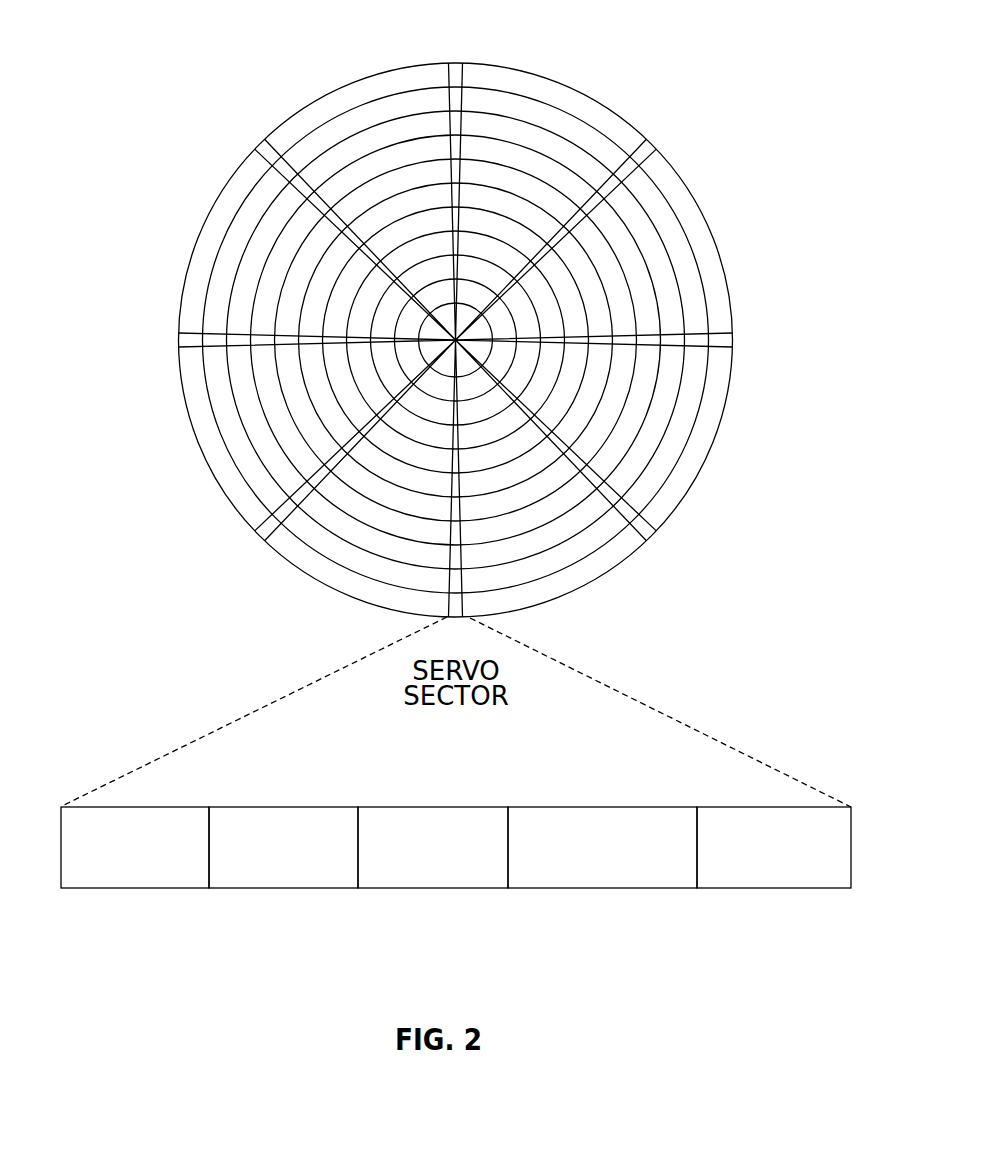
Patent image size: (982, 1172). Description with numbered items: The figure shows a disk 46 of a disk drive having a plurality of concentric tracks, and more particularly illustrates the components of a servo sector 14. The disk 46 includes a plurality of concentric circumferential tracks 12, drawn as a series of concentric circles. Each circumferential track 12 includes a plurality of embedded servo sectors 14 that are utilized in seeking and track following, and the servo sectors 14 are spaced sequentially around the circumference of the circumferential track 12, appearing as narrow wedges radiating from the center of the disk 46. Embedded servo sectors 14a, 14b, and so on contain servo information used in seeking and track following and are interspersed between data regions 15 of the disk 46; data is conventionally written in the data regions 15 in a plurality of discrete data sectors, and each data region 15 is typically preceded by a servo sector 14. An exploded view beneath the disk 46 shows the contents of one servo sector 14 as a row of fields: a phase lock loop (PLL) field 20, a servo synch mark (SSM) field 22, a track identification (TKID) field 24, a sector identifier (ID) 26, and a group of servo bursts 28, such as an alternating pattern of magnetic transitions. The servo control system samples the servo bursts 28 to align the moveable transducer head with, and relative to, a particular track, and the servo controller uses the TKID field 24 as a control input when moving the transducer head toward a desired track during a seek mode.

The circumferential track 12 is at (224, 235).
The servo sector 14 is at (458, 72).
The embedded servo sector 14a is at (262, 148).
The embedded servo sector 14b is at (188, 342).
The data region 15 is at (526, 110).
The phase lock loop (PLL) field 20 is at (78, 890).
The servo synch mark (SSM) field 22 is at (228, 890).
The track identification (TKID) field 24 is at (378, 890).
The sector identifier (ID) 26 is at (532, 890).
The servo bursts 28 is at (723, 890).
The disk 46 is at (451, 343).